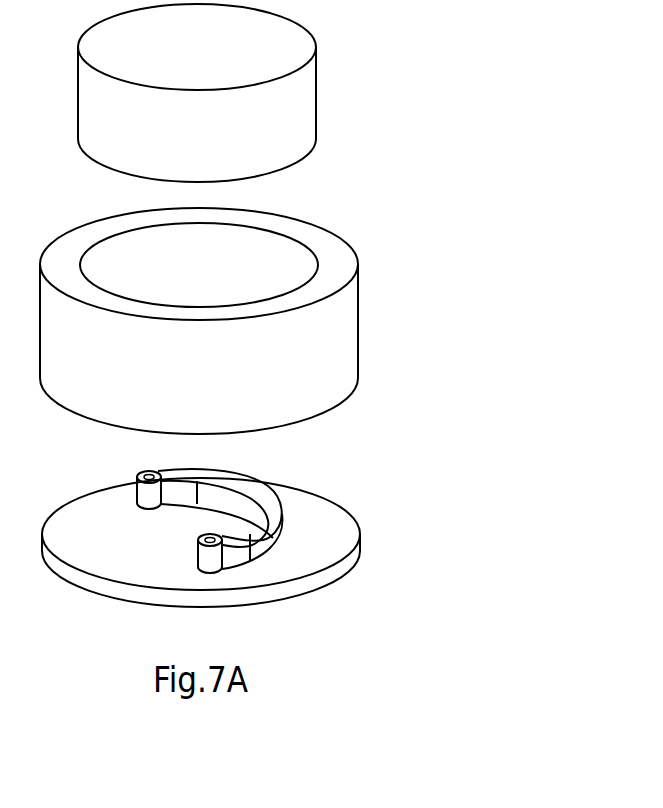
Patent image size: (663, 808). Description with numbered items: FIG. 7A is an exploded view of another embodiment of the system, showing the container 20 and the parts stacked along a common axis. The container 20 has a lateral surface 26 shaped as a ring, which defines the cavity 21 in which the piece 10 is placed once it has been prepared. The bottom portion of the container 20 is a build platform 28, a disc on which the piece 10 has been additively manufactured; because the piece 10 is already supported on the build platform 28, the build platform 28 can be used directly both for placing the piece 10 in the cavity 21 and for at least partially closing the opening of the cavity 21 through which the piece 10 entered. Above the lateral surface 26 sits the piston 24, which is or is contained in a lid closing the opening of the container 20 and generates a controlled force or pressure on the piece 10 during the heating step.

The piece 10 is at (270, 498).
The container 20 is at (434, 157).
The cavity 21 is at (214, 276).
The piston 24 is at (293, 107).
The lateral surface 26 is at (328, 348).
The build platform 28 is at (310, 582).